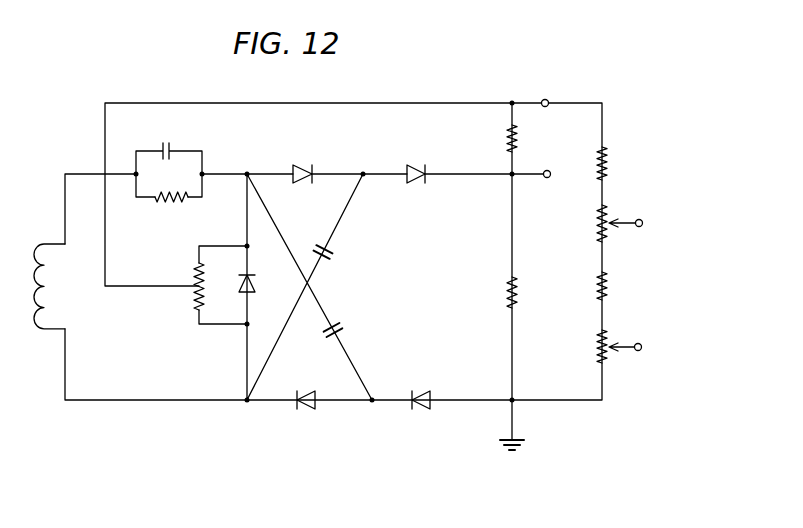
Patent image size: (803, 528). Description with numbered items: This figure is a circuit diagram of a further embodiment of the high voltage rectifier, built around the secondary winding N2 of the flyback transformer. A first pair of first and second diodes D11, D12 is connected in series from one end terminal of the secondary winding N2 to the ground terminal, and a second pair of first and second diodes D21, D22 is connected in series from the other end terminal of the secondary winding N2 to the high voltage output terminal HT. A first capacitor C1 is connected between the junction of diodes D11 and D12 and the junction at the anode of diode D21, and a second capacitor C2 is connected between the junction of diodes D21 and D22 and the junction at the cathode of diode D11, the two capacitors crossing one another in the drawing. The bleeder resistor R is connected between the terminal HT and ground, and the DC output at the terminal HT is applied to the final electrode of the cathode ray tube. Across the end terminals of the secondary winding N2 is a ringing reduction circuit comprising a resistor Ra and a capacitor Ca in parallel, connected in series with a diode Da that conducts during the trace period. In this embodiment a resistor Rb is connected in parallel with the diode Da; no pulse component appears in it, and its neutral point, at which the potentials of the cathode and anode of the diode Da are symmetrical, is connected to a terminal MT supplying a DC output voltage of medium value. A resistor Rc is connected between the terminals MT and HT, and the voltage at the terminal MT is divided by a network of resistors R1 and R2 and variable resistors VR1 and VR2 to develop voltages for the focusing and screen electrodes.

The secondary winding N2 is at (38, 329).
The capacitor Ca is at (170, 150).
The resistor Ra is at (173, 202).
The resistor Rb is at (195, 297).
The diode Da is at (258, 286).
The first diode of second pair D21 is at (311, 153).
The second diode of second pair D22 is at (422, 153).
The first diode of first pair D11 is at (310, 409).
The second diode of first pair D12 is at (419, 409).
The first capacitor C1 is at (341, 333).
The second capacitor C2 is at (333, 254).
The terminal MT is at (546, 99).
The high voltage output terminal HT is at (545, 180).
The resistor Rc is at (518, 140).
The bleeder resistor R is at (507, 292).
The resistor R1 is at (608, 170).
The variable resistor VR1 is at (612, 218).
The resistor R2 is at (608, 287).
The variable resistor VR2 is at (611, 339).